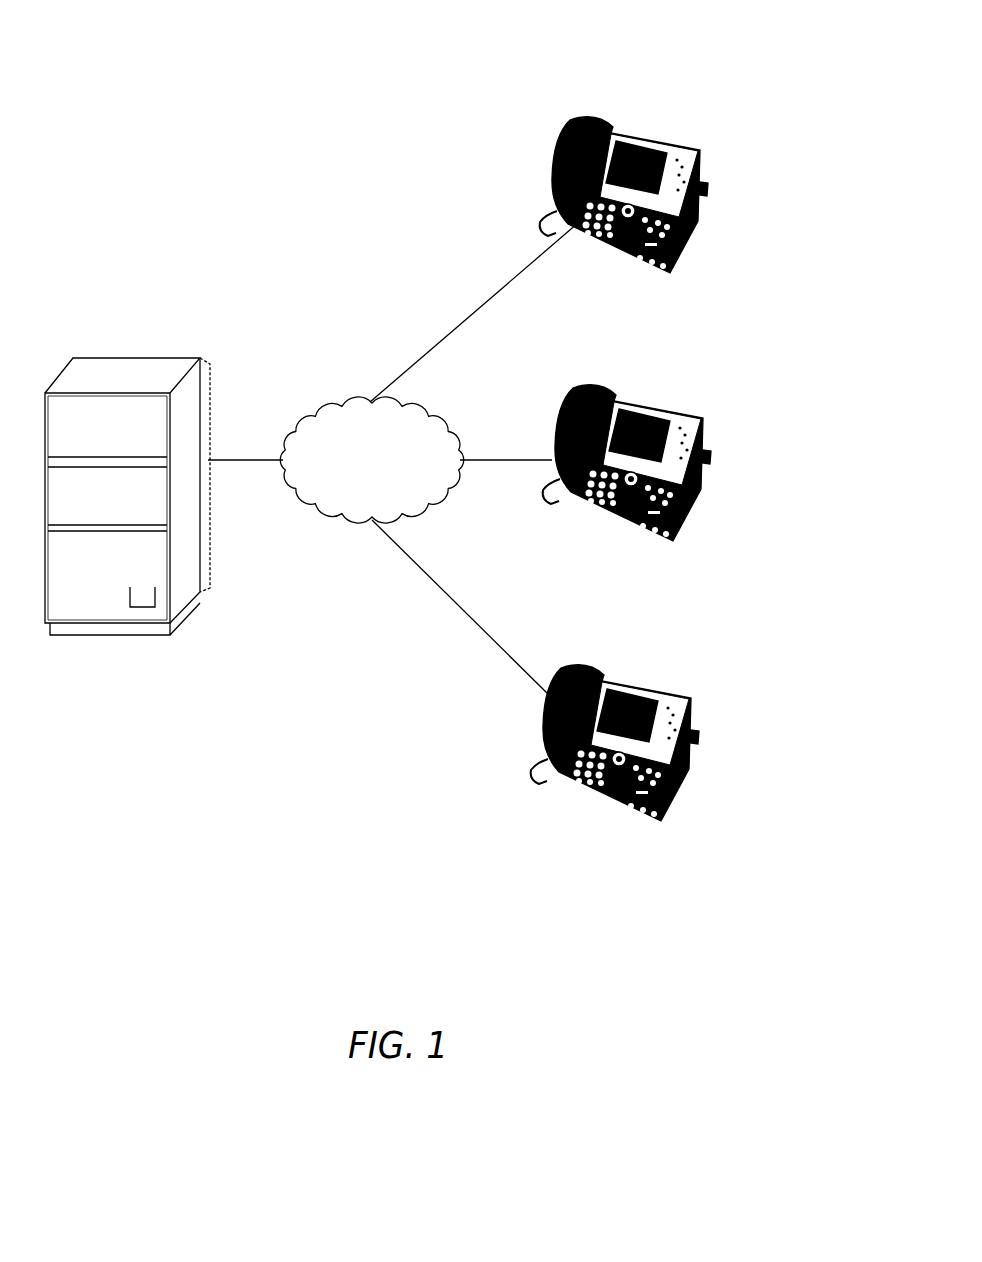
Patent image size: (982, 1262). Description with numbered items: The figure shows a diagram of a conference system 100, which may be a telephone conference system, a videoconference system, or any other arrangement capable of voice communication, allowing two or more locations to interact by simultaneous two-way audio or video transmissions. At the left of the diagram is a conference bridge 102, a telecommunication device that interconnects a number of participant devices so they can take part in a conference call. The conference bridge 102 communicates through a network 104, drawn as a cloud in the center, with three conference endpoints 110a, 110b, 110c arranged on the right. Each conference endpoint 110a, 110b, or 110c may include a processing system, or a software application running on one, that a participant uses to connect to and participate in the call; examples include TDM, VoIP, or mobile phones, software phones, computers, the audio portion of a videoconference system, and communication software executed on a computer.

The conference system 100 is at (507, 58).
The conference bridge 102 is at (135, 357).
The network 104 is at (360, 478).
The conference endpoint 110a is at (653, 135).
The conference endpoint 110b is at (638, 403).
The conference endpoint 110c is at (638, 683).